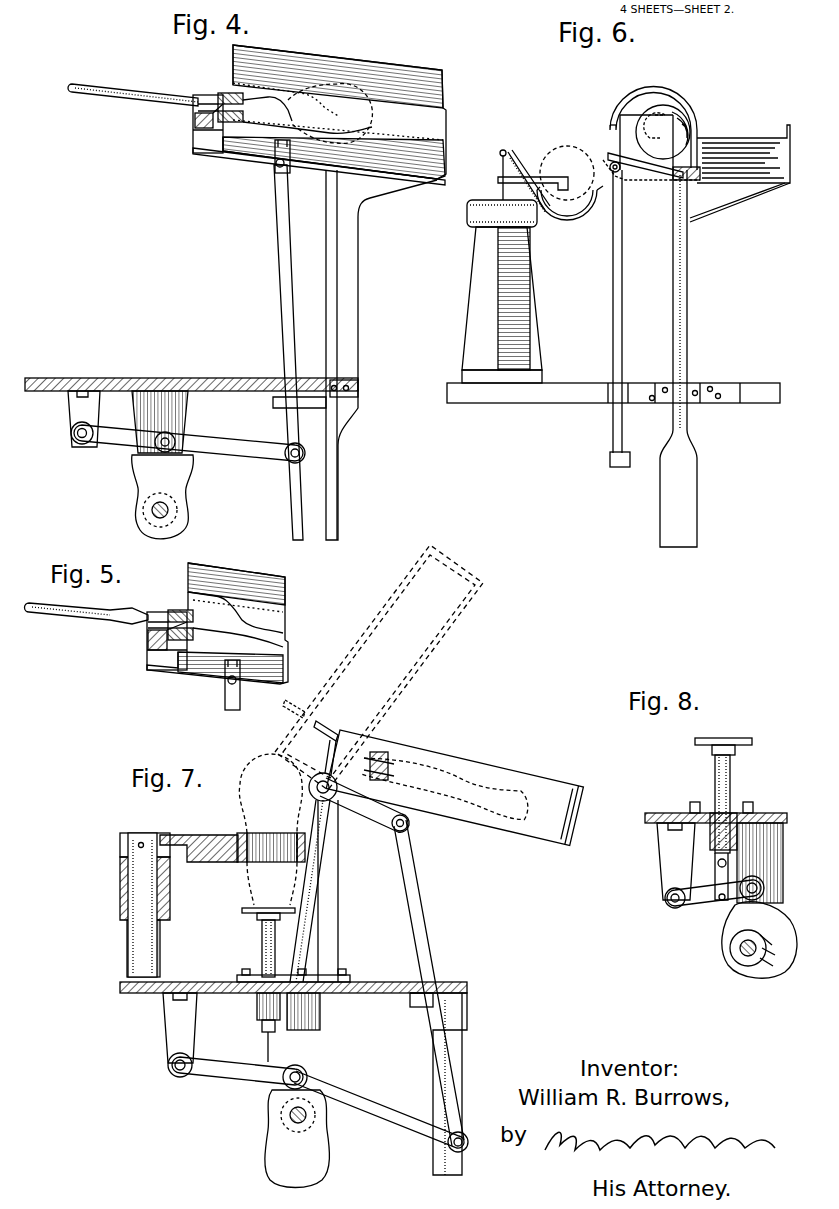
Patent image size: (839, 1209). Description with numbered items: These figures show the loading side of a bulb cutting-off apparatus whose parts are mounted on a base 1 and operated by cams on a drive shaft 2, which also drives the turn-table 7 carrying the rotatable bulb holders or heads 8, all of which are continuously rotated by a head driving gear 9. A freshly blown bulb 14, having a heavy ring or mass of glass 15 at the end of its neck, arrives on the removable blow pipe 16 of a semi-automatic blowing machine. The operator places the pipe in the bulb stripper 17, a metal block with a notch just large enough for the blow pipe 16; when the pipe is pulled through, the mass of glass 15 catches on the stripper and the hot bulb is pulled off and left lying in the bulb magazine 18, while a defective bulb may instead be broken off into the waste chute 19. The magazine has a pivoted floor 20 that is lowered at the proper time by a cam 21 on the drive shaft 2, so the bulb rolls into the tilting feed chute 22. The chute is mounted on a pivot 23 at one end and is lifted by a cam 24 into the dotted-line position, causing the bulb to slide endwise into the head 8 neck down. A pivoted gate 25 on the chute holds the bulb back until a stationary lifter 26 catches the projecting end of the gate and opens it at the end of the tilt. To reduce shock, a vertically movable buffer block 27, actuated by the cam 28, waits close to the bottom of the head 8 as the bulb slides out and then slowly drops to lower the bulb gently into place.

In FIG. 4, the base 1 is at (218, 377).
In FIG. 6, the base 1 is at (550, 400).
In FIG. 7, the base 1 is at (385, 982).
In FIG. 8, the base 1 is at (656, 813).
In FIG. 4, the drive shaft 2 is at (170, 510).
In FIG. 7, the drive shaft 2 is at (290, 1115).
In FIG. 8, the drive shaft 2 is at (738, 965).
In FIG. 7, the turn-table 7 is at (190, 865).
In FIG. 7, the bulb holder or head 8 is at (237, 835).
In FIG. 7, the head driving gear 9 is at (125, 835).
In FIG. 4, the bulb 14 is at (258, 120).
In FIG. 6, the bulb 14 is at (665, 105).
In FIG. 7, the bulb 14 is at (270, 829).
In FIG. 4, the ring or mass of glass 15 is at (225, 95).
In FIG. 5, the ring or mass of glass 15 is at (178, 612).
In FIG. 4, the blow pipe 16 is at (117, 92).
In FIG. 5, the blow pipe 16 is at (70, 616).
In FIG. 4, the bulb stripper 17 is at (195, 121).
In FIG. 5, the bulb stripper 17 is at (148, 642).
In FIG. 4, the bulb magazine 18 is at (325, 58).
In FIG. 6, the bulb magazine 18 is at (687, 68).
In FIG. 5, the bulb magazine 18 is at (232, 570).
In FIG. 6, the waste chute 19 is at (758, 138).
In FIG. 4, the pivoted floor 20 is at (298, 145).
In FIG. 6, the pivoted floor 20 is at (636, 160).
In FIG. 5, the pivoted floor 20 is at (203, 655).
In FIG. 4, the cam 21 is at (178, 476).
In FIG. 6, the tilting feed chute 22 is at (592, 205).
In FIG. 7, the tilting feed chute 22 is at (541, 782).
In FIG. 6, the pivot 23 is at (466, 215).
In FIG. 7, the pivot 23 is at (345, 800).
In FIG. 7, the cam 24 is at (267, 1143).
In FIG. 6, the pivoted gate 25 is at (550, 180).
In FIG. 7, the pivoted gate 25 is at (380, 768).
In FIG. 6, the stationary lifter 26 is at (503, 150).
In FIG. 7, the stationary lifter 26 is at (334, 735).
In FIG. 7, the buffer block 27 is at (250, 912).
In FIG. 8, the buffer block 27 is at (700, 746).
In FIG. 8, the cam 28 is at (720, 950).